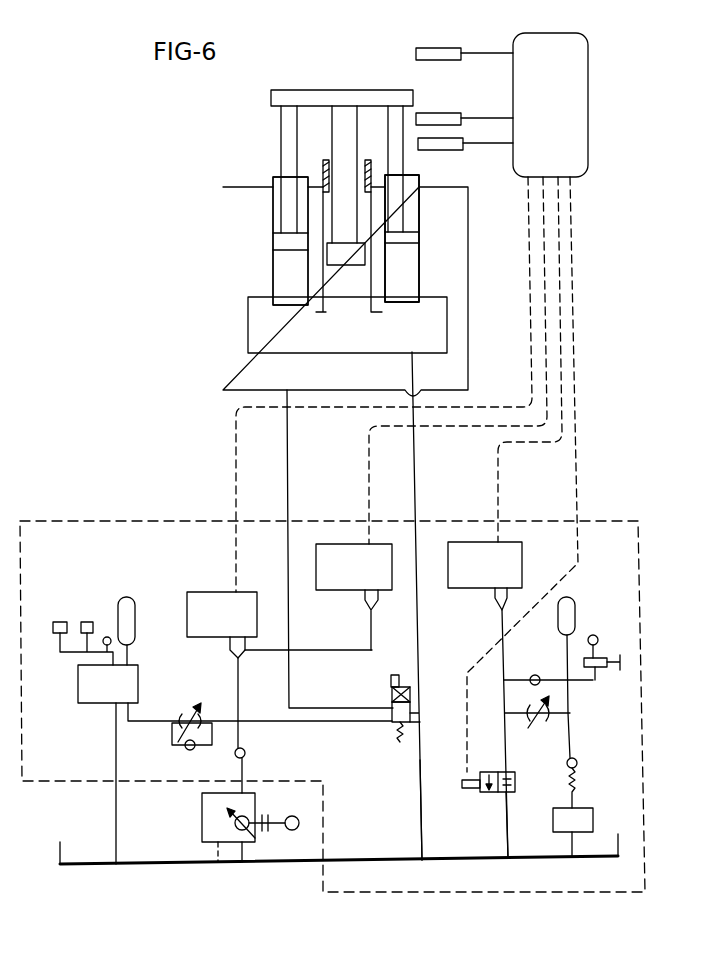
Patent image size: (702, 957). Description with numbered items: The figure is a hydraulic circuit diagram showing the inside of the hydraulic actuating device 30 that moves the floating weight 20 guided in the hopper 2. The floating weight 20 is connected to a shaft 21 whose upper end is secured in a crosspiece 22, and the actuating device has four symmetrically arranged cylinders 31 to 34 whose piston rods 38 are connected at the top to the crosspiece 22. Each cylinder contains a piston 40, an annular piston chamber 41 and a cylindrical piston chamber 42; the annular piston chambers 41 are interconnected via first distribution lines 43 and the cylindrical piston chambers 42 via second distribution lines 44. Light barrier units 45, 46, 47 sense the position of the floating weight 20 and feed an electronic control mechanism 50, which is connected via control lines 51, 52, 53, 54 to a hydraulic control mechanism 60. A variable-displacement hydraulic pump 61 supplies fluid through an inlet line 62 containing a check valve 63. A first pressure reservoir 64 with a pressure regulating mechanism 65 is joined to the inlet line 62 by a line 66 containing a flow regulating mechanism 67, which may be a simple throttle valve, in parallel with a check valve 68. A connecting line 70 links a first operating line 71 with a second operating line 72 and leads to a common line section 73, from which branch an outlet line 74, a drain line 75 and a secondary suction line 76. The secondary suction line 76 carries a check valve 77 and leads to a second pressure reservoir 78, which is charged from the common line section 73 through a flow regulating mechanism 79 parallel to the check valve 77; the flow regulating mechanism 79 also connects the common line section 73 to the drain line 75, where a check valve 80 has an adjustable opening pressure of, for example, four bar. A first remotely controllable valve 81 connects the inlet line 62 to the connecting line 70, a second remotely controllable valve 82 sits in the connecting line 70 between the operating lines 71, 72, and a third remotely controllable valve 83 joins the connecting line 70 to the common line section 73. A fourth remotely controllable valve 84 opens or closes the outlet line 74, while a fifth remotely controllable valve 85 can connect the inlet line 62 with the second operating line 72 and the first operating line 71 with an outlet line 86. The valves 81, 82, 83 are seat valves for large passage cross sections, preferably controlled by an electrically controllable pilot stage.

The hopper 2 is at (303, 217).
The floating weight 20 is at (310, 260).
The shaft 21 is at (352, 125).
The crosspiece 22 is at (318, 90).
The hydraulic actuating device 30 is at (268, 127).
The cylinder 31 is at (272, 280).
The cylinder 34 is at (402, 238).
The piston rod 38 is at (282, 118).
The piston 40 is at (410, 237).
The annular piston chamber 41 is at (403, 197).
The cylindrical piston chamber 42 is at (405, 273).
The first distribution lines 43 is at (223, 320).
The second distribution lines 44 is at (248, 345).
The light barrier unit 45 is at (436, 48).
The light barrier unit 46 is at (438, 113).
The light barrier unit 47 is at (445, 150).
The electronic control mechanism 50 is at (543, 45).
The control line 51 is at (528, 203).
The control line 52 is at (545, 240).
The control line 53 is at (560, 275).
The control line 54 is at (572, 310).
The hydraulic control mechanism 60 is at (60, 568).
The hydraulic pump 61 is at (202, 812).
The inlet line 62 is at (240, 735).
The check valve 63 is at (245, 755).
The first pressure reservoir 64 is at (125, 597).
The pressure regulating mechanism 65 is at (80, 688).
The line 66 is at (140, 722).
The flow regulating mechanism 67 is at (185, 718).
The check valve 68 is at (188, 750).
The connecting line 70 is at (342, 650).
The first operating line 71 is at (287, 460).
The second operating line 72 is at (418, 465).
The common line section 73 is at (503, 622).
The outlet line 74 is at (508, 822).
The drain line 75 is at (588, 805).
The secondary suction line 76 is at (558, 678).
The check valve 77 is at (537, 676).
The second pressure reservoir 78 is at (575, 597).
The flow regulating mechanism 79 is at (537, 725).
The check valve 80 is at (576, 761).
The first remotely controllable valve 81 is at (205, 592).
The second remotely controllable valve 82 is at (368, 583).
The third remotely controllable valve 83 is at (498, 581).
The fourth remotely controllable valve 84 is at (487, 772).
The fifth remotely controllable valve 85 is at (392, 690).
The outlet line 86 is at (422, 800).